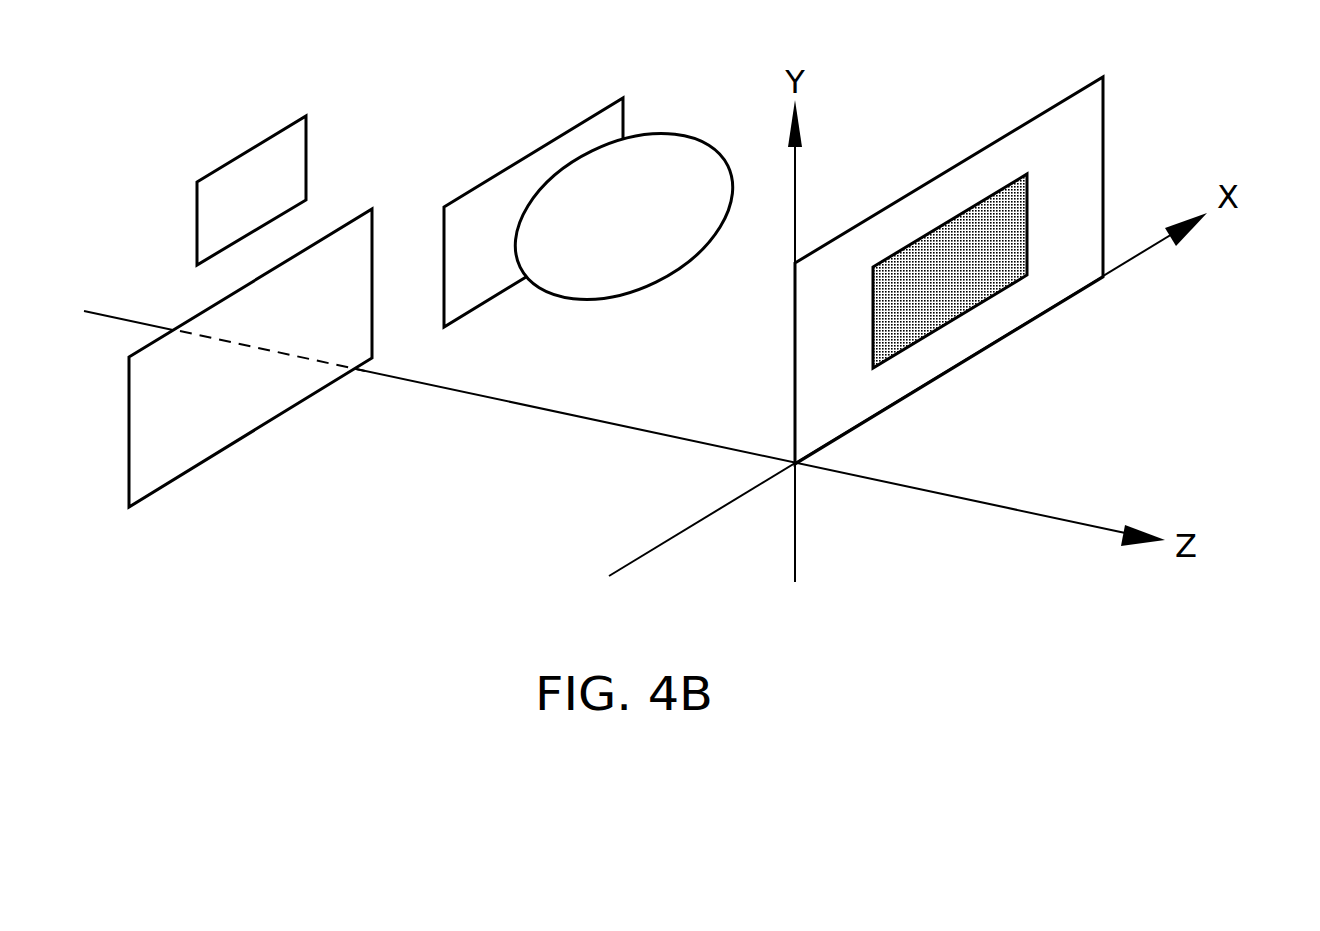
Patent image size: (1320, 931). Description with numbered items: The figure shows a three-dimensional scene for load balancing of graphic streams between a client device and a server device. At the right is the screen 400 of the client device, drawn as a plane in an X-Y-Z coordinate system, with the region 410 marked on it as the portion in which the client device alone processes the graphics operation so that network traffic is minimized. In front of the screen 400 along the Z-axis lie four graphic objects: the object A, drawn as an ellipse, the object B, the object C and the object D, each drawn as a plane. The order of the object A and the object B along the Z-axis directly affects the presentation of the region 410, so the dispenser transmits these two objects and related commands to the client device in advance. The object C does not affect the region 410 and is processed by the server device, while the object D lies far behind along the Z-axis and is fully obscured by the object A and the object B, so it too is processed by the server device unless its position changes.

The screen 400 is at (1053, 106).
The region 410 is at (947, 221).
The object A is at (611, 234).
The object B is at (466, 263).
The object C is at (310, 321).
The object D is at (246, 206).